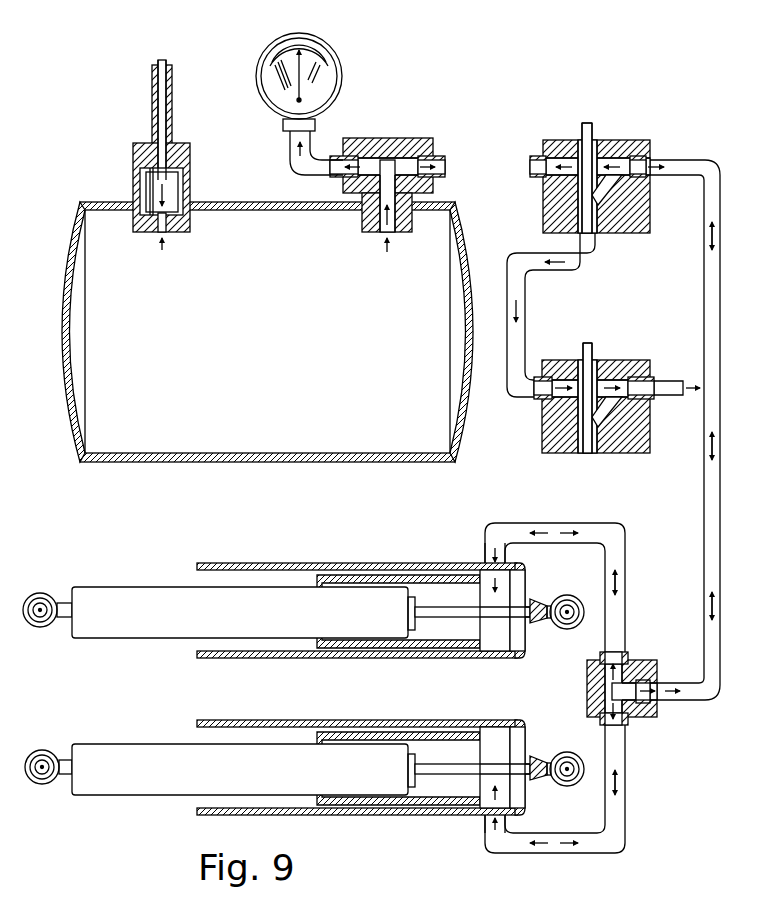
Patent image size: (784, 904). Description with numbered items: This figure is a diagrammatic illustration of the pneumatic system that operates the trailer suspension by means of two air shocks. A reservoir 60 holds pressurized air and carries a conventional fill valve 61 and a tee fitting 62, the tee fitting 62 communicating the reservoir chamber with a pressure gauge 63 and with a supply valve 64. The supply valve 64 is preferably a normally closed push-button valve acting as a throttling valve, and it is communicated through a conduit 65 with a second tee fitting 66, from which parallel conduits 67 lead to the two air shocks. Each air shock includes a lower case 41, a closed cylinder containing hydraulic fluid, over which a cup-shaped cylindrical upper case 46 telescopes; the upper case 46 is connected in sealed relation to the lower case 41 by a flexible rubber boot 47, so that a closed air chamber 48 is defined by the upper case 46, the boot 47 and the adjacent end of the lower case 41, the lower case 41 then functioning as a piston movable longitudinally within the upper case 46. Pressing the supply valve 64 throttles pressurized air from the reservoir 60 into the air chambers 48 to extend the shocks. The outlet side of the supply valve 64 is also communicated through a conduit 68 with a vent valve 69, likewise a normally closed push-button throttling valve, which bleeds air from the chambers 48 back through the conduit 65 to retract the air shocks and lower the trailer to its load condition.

The lower case 41 is at (112, 600).
The upper case 46 is at (240, 563).
The boot 47 is at (350, 575).
The air chamber 48 is at (438, 582).
The reservoir 60 is at (180, 462).
The fill valve 61 is at (133, 148).
The tee fitting 62 is at (398, 142).
The pressure gauge 63 is at (330, 80).
The supply valve 64 is at (635, 146).
The conduit 65 is at (715, 300).
The second tee fitting 66 is at (648, 716).
The parallel conduits 67 is at (612, 538).
The conduit 68 is at (525, 297).
The vent valve 69 is at (622, 367).